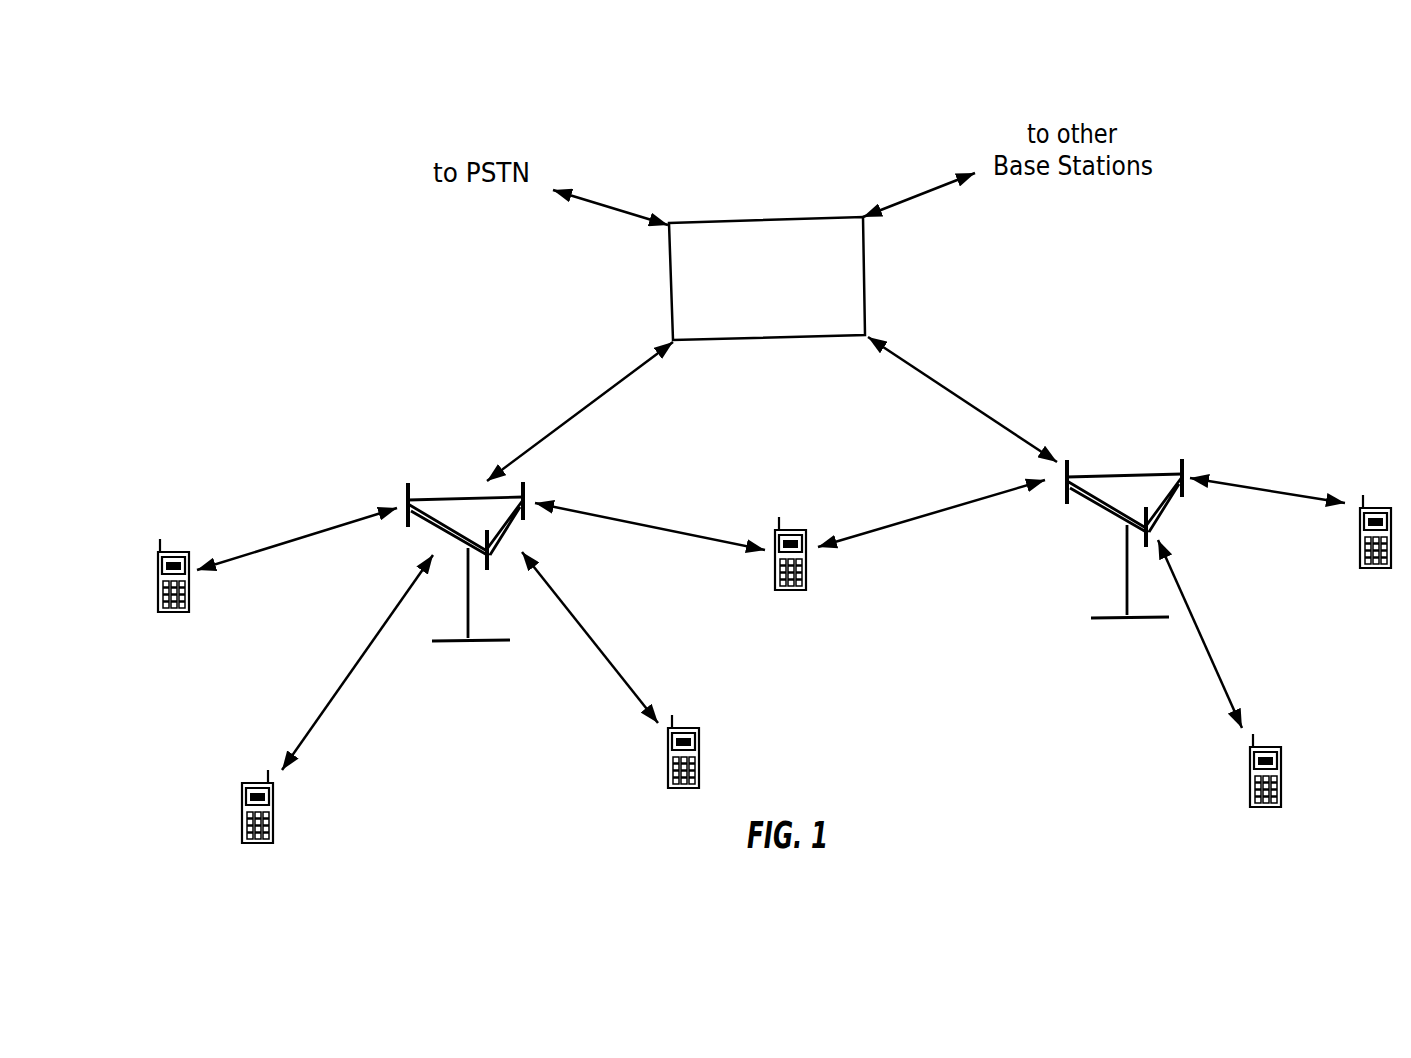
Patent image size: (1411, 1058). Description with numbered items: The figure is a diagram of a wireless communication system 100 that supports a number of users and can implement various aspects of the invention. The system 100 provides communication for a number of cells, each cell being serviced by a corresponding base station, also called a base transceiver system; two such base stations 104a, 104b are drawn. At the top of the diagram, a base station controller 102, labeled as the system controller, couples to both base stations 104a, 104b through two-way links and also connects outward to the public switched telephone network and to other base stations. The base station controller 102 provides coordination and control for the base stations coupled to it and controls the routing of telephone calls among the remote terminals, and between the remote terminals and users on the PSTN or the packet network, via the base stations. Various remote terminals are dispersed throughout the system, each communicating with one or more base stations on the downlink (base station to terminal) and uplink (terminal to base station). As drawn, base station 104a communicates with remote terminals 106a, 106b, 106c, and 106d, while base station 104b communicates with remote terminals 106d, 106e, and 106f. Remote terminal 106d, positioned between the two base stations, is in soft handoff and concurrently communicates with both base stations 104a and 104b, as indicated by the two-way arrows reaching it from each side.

The wireless communication system 100 is at (1274, 96).
The base station controller 102 is at (763, 218).
The base station 104a is at (452, 496).
The base station 104b is at (1153, 456).
The remote terminal 106a is at (173, 552).
The remote terminal 106b is at (256, 783).
The remote terminal 106c is at (684, 728).
The remote terminal 106d is at (791, 530).
The remote terminal 106e is at (1265, 747).
The remote terminal 106f is at (1375, 508).